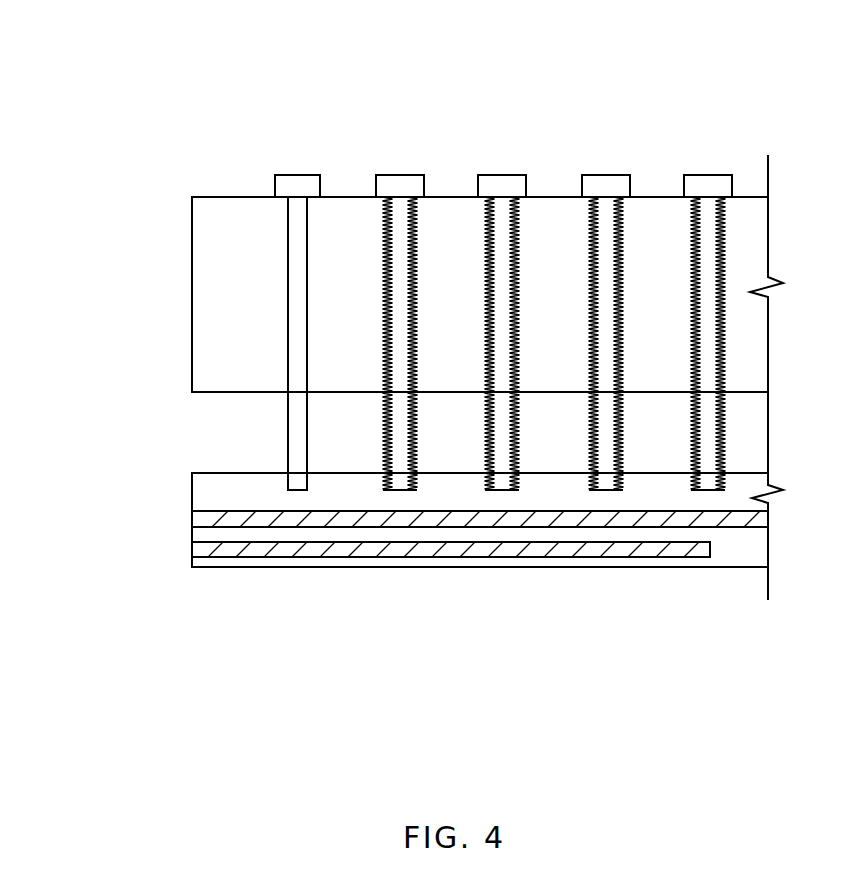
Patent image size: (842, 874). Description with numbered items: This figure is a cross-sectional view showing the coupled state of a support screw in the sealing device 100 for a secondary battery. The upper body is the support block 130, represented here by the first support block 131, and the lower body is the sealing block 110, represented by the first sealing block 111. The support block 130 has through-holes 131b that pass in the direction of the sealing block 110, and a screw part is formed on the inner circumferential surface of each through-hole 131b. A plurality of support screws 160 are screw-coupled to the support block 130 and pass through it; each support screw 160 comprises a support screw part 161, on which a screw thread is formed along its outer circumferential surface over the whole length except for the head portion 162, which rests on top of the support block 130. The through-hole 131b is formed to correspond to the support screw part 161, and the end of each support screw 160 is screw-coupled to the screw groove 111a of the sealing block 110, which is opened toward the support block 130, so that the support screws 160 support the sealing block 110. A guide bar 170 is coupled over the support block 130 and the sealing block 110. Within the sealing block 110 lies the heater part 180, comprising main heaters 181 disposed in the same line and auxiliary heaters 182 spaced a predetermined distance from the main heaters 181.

The sealing device 100 is at (770, 48).
The sealing block 110 is at (402, 514).
The first sealing block 111 is at (190, 491).
The screw groove 111a is at (385, 479).
The support block 130 is at (402, 294).
The first support block 131 is at (190, 296).
The through-hole 131b is at (383, 228).
The support screw 160 is at (490, 167).
The support screw part 161 is at (400, 207).
The head portion 162 is at (515, 182).
The guide bar 170 is at (275, 185).
The heater part 180 is at (533, 663).
The main heater 181 is at (528, 520).
The auxiliary heater 182 is at (467, 550).